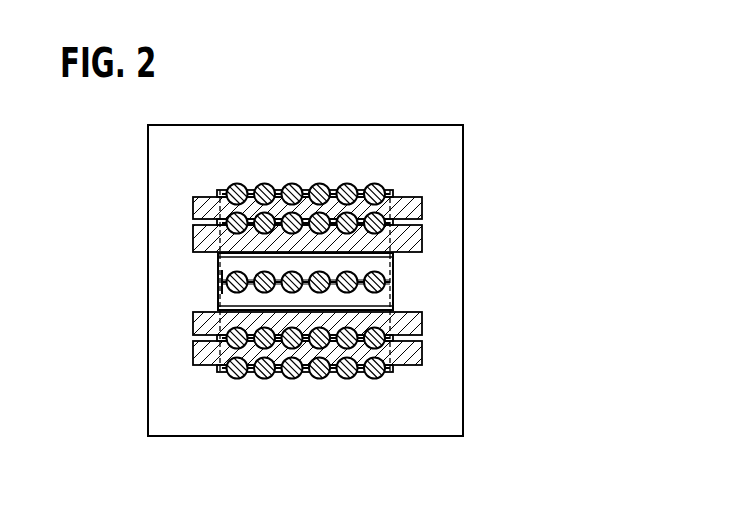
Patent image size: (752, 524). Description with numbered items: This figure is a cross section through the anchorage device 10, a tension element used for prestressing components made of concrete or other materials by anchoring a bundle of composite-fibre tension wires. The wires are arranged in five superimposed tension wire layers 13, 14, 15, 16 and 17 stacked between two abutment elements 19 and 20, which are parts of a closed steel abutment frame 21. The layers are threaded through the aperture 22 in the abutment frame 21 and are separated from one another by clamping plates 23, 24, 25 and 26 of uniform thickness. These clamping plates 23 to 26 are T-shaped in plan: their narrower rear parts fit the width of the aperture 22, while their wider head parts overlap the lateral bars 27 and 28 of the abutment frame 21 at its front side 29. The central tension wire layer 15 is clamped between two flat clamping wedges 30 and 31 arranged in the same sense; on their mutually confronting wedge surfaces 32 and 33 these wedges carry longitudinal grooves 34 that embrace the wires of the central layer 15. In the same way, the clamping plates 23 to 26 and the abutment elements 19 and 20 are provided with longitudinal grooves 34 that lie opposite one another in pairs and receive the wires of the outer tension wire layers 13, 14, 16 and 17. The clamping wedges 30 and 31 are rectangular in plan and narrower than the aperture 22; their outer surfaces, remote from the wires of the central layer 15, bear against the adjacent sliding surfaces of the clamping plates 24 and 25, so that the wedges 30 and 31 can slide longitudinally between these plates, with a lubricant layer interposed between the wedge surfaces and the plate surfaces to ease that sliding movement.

The anchorage device 10 is at (378, 79).
The tension wire layer 13 is at (438, 192).
The tension wire layer 14 is at (443, 228).
The central tension wire layer 15 is at (452, 281).
The tension wire layer 16 is at (443, 334).
The tension wire layer 17 is at (450, 372).
The abutment element 19 is at (288, 127).
The abutment element 20 is at (350, 428).
The abutment frame 21 is at (141, 449).
The aperture 22 is at (217, 282).
The clamping plate 23 is at (412, 196).
The clamping plate 24 is at (412, 236).
The clamping plate 25 is at (413, 325).
The clamping plate 26 is at (413, 366).
The lateral bar 27 is at (167, 335).
The lateral bar 28 is at (455, 320).
The front side 29 is at (218, 158).
The clamping wedge 30 is at (345, 262).
The clamping wedge 31 is at (347, 300).
The wedge surface 32 is at (248, 273).
The wedge surface 33 is at (281, 282).
The longitudinal grooves 34 is at (234, 190).